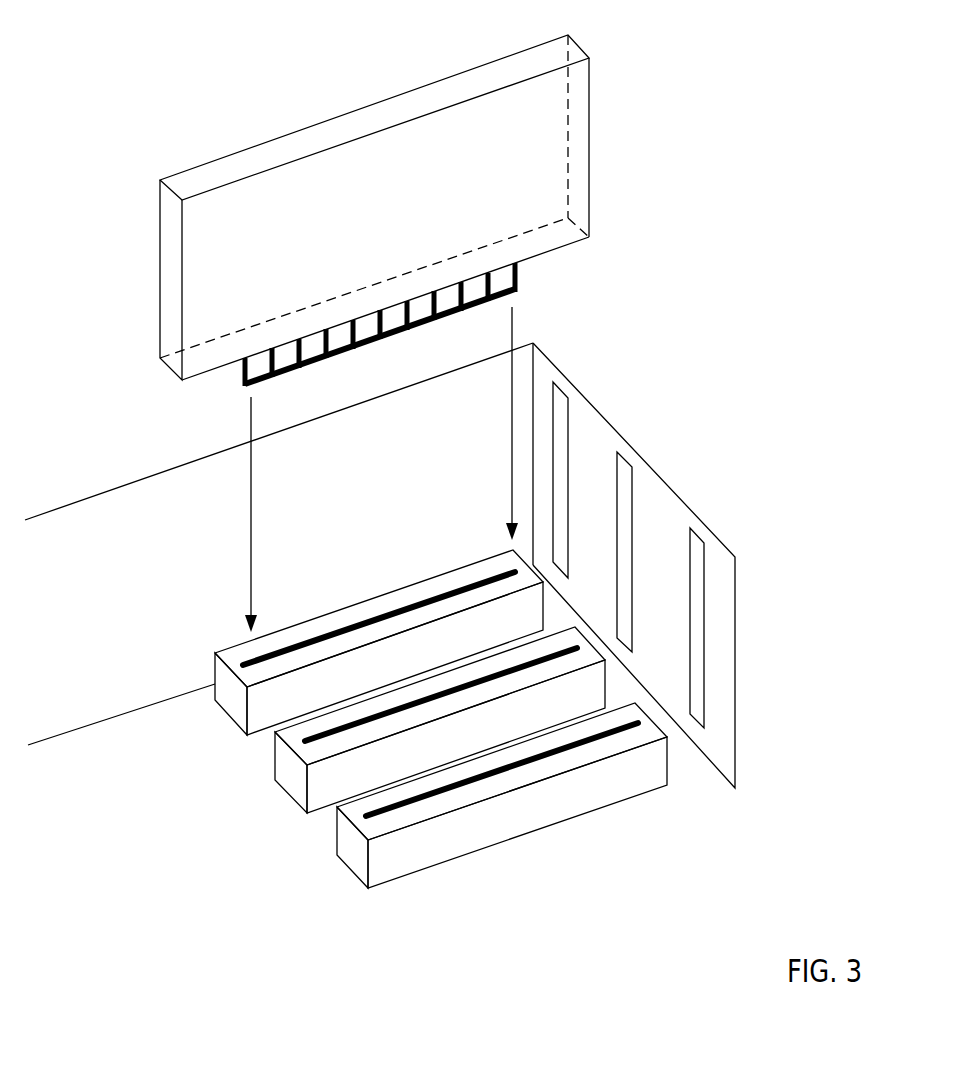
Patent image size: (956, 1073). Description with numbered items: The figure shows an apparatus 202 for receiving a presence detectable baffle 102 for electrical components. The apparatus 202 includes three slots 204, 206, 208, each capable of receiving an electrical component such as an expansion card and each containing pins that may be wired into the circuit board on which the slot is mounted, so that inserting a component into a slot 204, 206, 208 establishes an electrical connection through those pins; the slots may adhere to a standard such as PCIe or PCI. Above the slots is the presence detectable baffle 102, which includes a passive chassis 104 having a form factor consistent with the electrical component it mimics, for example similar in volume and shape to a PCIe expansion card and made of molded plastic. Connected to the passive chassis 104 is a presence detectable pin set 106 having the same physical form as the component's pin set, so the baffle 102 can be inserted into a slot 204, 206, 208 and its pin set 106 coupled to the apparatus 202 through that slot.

The presence detectable baffle 102 is at (632, 313).
The passive chassis 104 is at (367, 88).
The presence detectable pin set 106 is at (526, 305).
The apparatus 202 is at (770, 872).
The slot 204 is at (209, 720).
The slot 206 is at (270, 802).
The slot 208 is at (332, 876).